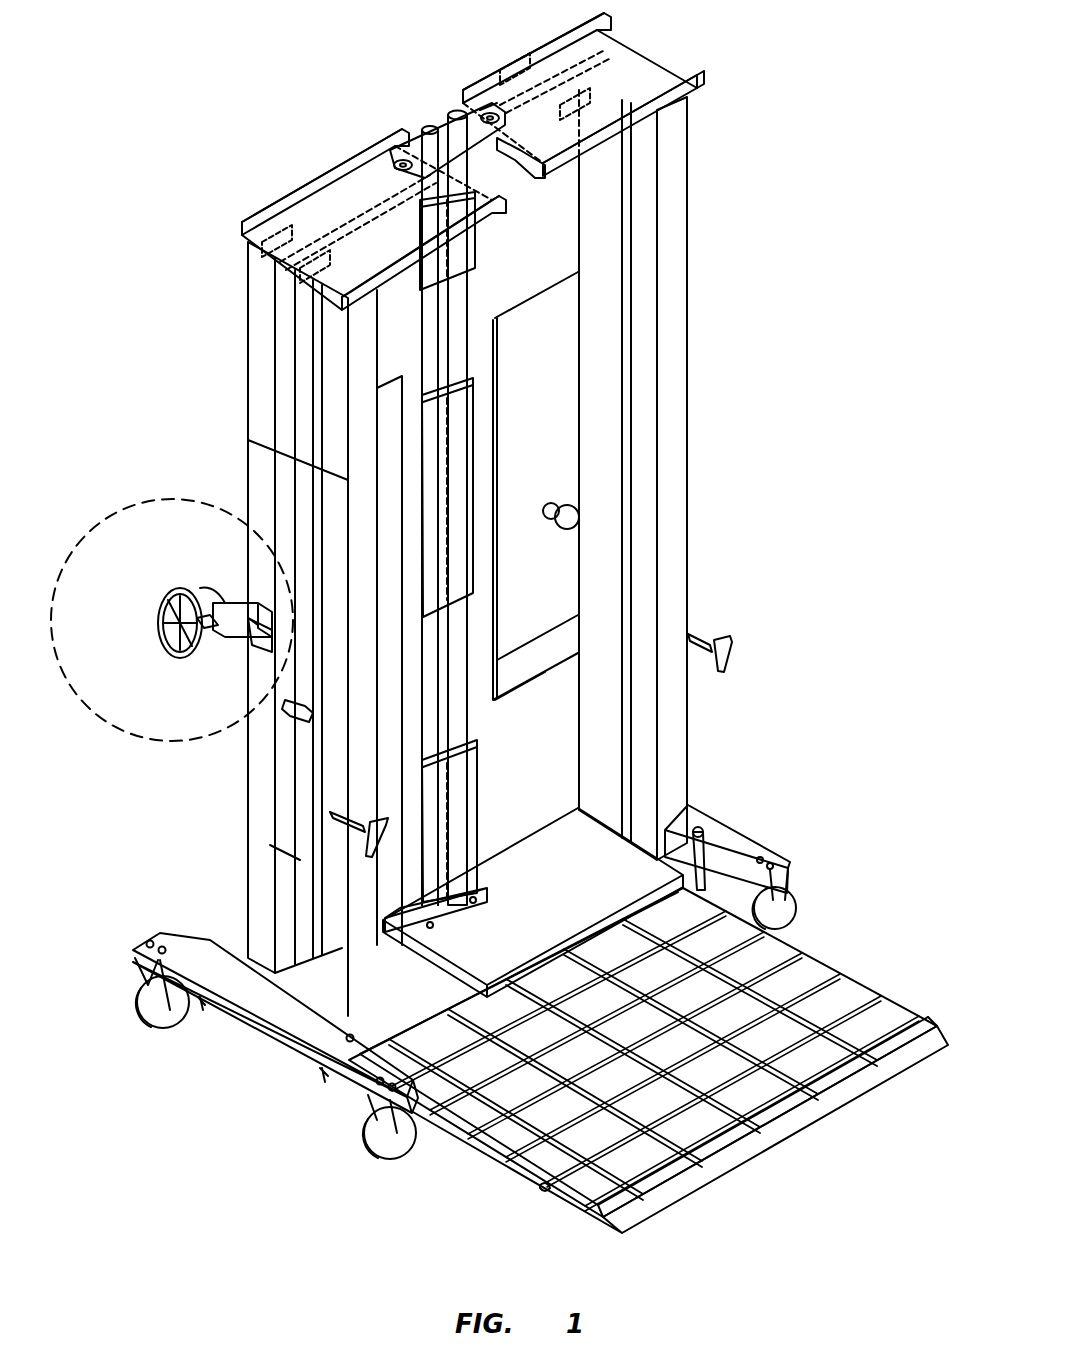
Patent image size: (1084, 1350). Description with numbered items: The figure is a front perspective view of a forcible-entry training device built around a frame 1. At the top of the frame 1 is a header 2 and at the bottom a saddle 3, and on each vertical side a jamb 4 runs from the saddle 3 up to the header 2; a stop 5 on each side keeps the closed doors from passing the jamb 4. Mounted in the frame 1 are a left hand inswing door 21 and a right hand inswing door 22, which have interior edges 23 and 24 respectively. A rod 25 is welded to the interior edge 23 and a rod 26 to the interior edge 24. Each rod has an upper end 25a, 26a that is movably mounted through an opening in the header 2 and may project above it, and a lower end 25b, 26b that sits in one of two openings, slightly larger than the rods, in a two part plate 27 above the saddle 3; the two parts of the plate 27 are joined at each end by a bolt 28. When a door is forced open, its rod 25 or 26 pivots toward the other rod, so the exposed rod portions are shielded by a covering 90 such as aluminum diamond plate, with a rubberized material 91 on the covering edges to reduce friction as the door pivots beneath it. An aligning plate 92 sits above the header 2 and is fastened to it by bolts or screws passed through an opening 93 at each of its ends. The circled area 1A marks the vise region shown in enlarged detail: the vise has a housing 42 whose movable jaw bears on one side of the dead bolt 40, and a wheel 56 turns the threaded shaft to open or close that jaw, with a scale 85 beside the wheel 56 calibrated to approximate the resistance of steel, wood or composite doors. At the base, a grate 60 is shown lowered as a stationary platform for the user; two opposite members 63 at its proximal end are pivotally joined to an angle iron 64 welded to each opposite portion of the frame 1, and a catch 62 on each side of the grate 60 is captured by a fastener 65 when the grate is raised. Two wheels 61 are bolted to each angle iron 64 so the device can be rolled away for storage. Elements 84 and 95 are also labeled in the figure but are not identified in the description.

The frame 1 is at (680, 325).
The detail area of latch mechanism 1A is at (152, 498).
The header 2 is at (290, 220).
The saddle 3 is at (494, 945).
The jamb 4 is at (255, 398).
The stop 5 is at (302, 872).
The left hand inswing door 21 is at (430, 658).
The right hand inswing door 22 is at (556, 742).
The interior edge 23 is at (345, 150).
The interior edge 24 is at (508, 148).
The rod 25 is at (445, 295).
The upper end 25a is at (430, 128).
The lower end 25b is at (478, 806).
The rod 26 is at (460, 338).
The upper end 26a is at (452, 110).
The lower end 26b is at (480, 868).
The two part plate 27 is at (418, 930).
The bolt 28 is at (478, 902).
The dead bolt 40 is at (250, 648).
The housing 42 is at (235, 603).
The wheel 56 is at (160, 622).
The grate 60 is at (770, 915).
The wheels 61 is at (140, 1025).
The catch 62 is at (870, 982).
The member 63 is at (705, 840).
The angle iron 64 is at (205, 945).
The fastener 65 is at (706, 632).
The column channel 84 is at (390, 440).
The scale 85 is at (195, 616).
The covering 90 is at (478, 243).
The rubberized material 91 is at (418, 283).
The aligning plate 92 is at (486, 110).
The opening 93 is at (400, 160).
The pin 95 is at (285, 714).